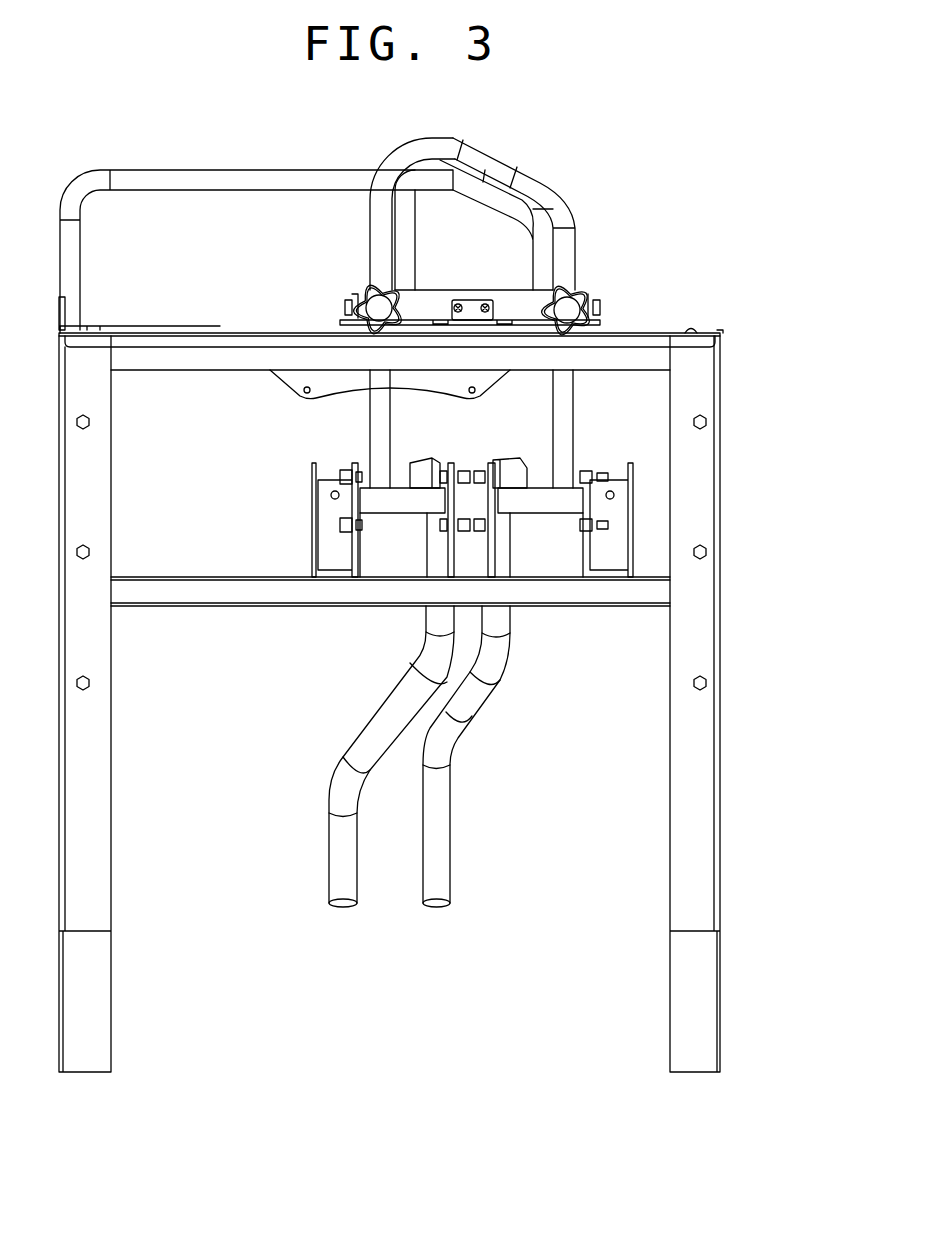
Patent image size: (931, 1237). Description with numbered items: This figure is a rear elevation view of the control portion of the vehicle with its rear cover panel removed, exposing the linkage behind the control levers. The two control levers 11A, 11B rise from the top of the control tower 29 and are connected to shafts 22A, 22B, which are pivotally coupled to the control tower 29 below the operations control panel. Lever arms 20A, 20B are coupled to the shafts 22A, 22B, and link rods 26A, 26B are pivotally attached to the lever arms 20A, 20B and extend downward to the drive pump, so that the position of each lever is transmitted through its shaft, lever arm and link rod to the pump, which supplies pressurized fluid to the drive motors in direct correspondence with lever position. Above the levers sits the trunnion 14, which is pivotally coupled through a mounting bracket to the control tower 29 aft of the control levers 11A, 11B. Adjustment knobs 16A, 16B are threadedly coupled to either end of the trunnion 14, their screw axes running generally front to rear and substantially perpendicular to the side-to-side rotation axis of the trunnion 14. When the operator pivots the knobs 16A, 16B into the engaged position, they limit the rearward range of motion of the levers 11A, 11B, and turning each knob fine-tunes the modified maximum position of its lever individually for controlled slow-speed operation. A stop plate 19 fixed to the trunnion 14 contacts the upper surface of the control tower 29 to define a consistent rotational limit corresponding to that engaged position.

The control lever 11A is at (402, 150).
The control lever 11B is at (563, 238).
The trunnion 14 is at (523, 307).
The adjustment knob 16A is at (368, 288).
The adjustment knob 16B is at (566, 295).
The stop plate 19 is at (473, 310).
The lever arm 20A is at (435, 463).
The lever arm 20B is at (503, 463).
The shaft 22A is at (370, 503).
The shaft 22B is at (541, 503).
The link rod 26A is at (435, 663).
The link rod 26B is at (490, 665).
The control tower 29 is at (698, 383).